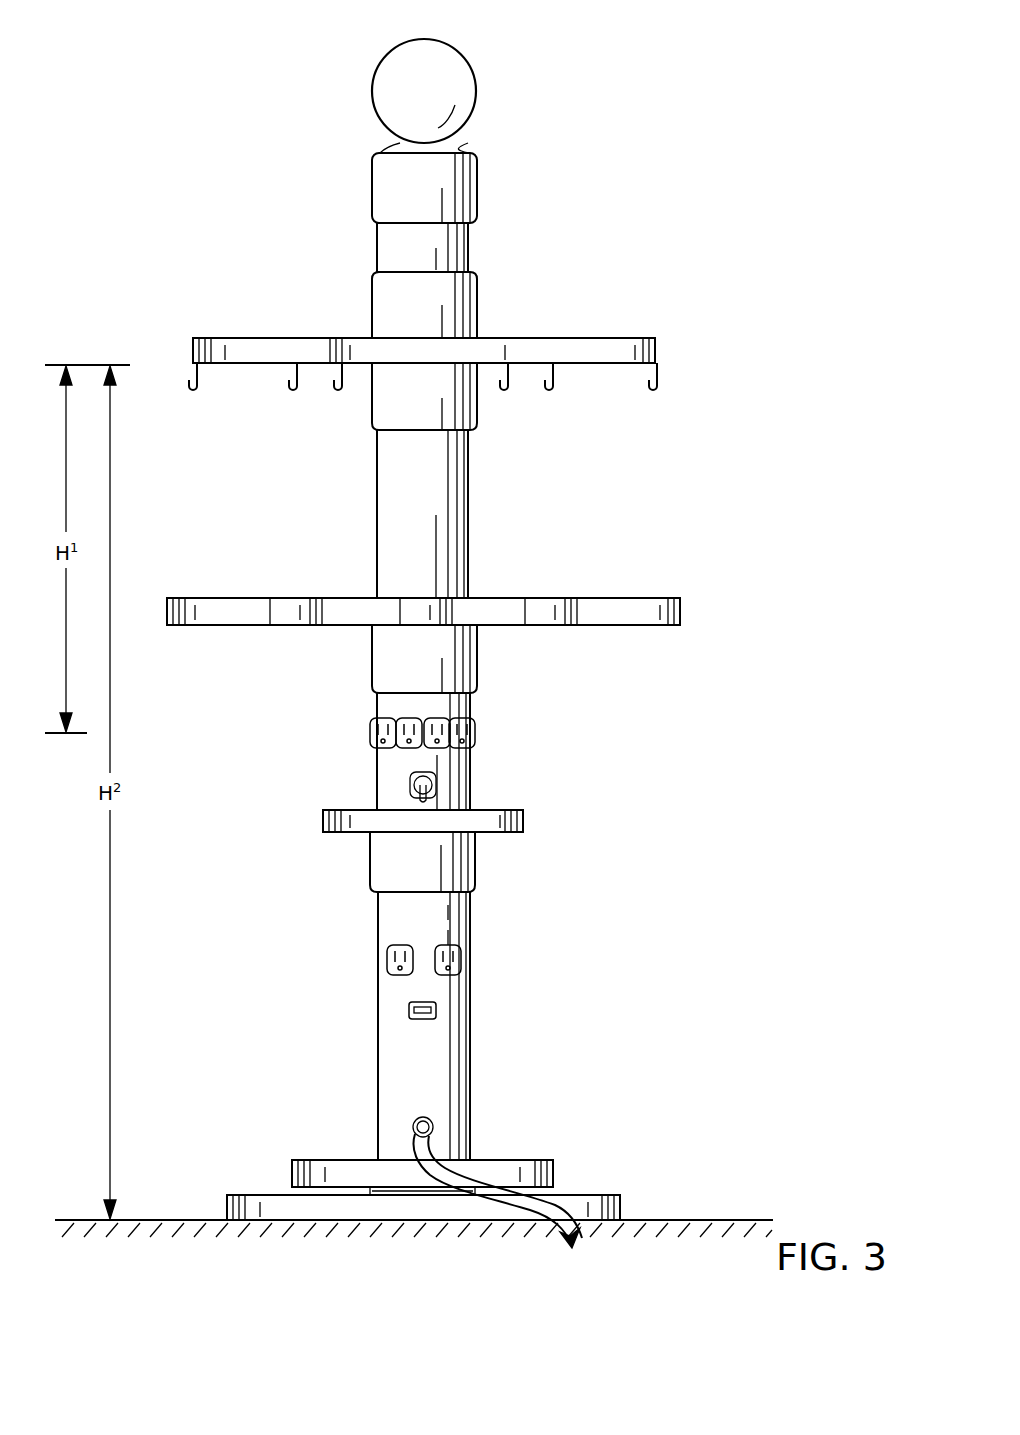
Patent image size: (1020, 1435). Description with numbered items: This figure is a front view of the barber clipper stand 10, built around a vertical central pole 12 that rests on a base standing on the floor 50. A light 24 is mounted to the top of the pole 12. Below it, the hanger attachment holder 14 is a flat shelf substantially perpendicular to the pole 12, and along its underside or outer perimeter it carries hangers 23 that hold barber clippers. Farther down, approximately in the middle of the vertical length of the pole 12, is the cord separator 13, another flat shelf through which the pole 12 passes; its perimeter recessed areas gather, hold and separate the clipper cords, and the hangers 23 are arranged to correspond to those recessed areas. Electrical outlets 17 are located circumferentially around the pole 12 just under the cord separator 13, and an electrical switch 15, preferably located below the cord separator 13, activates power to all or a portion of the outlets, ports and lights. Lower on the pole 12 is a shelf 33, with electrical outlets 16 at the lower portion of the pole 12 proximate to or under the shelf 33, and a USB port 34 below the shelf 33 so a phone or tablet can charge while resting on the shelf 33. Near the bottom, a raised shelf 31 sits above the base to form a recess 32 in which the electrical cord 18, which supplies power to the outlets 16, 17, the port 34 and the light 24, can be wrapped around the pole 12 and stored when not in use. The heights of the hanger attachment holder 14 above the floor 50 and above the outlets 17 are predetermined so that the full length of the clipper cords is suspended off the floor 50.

The barber clipper stand 10 is at (160, 152).
The central pole 12 is at (468, 1030).
The cord separator 13 is at (680, 610).
The hanger attachment holder 14 is at (342, 338).
The electrical switch 15 is at (432, 774).
The electrical outlet 16 is at (387, 960).
The electrical outlet 17 is at (377, 736).
The electrical cord 18 is at (468, 1192).
The hanger 23 is at (293, 392).
The light 24 is at (452, 86).
The raised shelf 31 is at (553, 1172).
The recess 32 is at (290, 1190).
The shelf 33 is at (523, 820).
The USB port 34 is at (410, 1010).
The floor 50 is at (750, 1220).